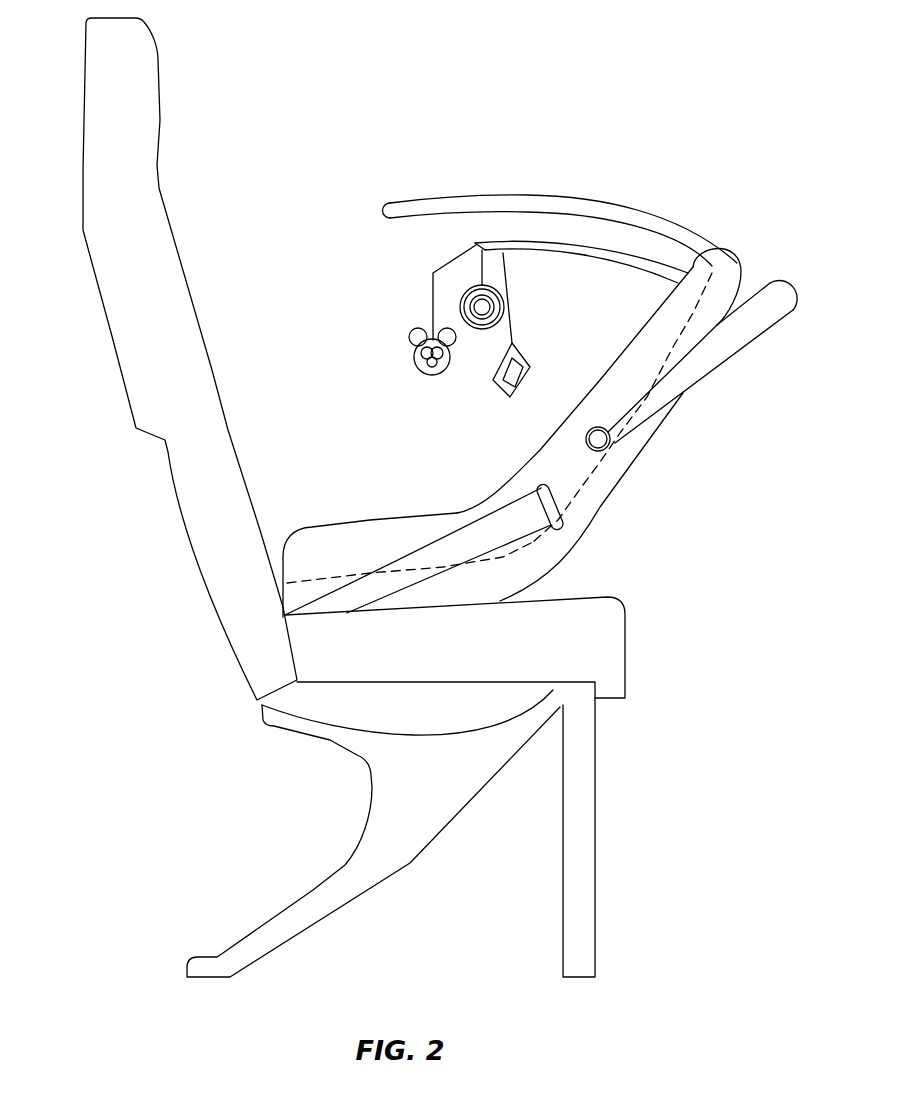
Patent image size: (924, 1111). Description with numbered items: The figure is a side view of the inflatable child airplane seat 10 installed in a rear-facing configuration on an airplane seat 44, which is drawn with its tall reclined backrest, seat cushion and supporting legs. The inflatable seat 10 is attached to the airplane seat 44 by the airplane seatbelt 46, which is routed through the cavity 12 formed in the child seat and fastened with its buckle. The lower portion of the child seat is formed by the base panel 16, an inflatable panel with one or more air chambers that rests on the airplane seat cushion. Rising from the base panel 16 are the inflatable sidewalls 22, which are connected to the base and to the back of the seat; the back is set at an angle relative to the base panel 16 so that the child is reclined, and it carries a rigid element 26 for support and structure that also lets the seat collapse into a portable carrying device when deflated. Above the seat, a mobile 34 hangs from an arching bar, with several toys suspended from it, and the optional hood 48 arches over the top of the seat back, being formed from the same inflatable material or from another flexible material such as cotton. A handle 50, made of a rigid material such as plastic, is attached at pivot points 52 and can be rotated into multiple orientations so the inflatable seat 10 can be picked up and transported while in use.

The inflatable child airplane seat 10 is at (670, 502).
The cavity 12 is at (567, 513).
The base panel 16 is at (343, 572).
The sidewalls 22 is at (550, 460).
The rigid element 26 is at (672, 348).
The mobile 34 is at (475, 243).
The airplane seat 44 is at (163, 380).
The airplane seatbelt 46 is at (527, 523).
The hood 48 is at (503, 202).
The handle 50 is at (740, 322).
The pivot points 52 is at (600, 438).